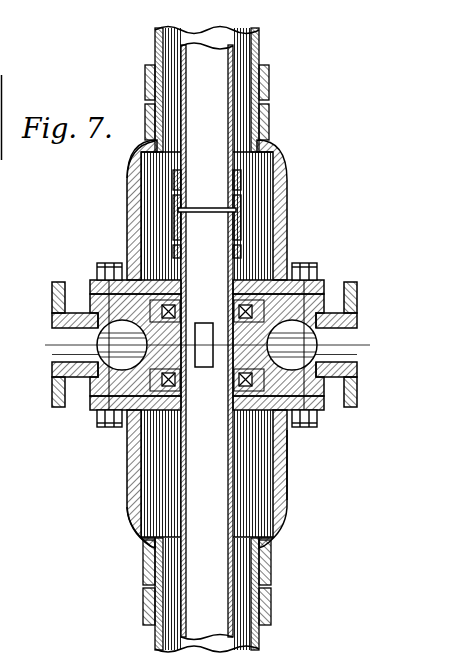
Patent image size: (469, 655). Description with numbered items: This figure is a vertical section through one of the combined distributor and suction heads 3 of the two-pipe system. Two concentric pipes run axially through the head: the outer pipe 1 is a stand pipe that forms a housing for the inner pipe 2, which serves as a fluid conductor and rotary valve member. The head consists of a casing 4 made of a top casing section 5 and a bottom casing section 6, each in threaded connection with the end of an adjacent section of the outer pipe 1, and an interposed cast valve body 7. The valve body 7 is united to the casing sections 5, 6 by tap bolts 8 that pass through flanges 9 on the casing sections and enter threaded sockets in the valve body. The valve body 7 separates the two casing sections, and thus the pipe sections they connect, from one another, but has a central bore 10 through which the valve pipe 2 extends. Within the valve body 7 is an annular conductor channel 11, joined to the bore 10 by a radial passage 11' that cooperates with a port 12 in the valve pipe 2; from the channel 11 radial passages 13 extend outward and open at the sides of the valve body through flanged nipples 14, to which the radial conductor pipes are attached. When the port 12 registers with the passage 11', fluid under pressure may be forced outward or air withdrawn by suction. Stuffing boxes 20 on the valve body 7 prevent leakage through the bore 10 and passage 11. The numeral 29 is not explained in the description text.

The outer pipe 1 is at (260, 45).
The inner pipe 2 is at (234, 165).
The combined distributor and suction head 3 is at (126, 207).
The casing 4 is at (124, 465).
The top casing section 5 is at (131, 159).
The bottom casing section 6 is at (126, 516).
The valve body 7 is at (320, 302).
The tap bolt 8 is at (303, 268).
The flange 9 is at (316, 283).
The central bore 10 is at (150, 295).
The annular conductor channel 11 is at (97, 363).
The radial passage 11' is at (309, 465).
The port 12 is at (209, 328).
The radial passage 13 is at (53, 330).
The flanged nipple 14 is at (58, 366).
The stuffing box 20 is at (160, 300).
The adjacent figure line 29 is at (0, 80).